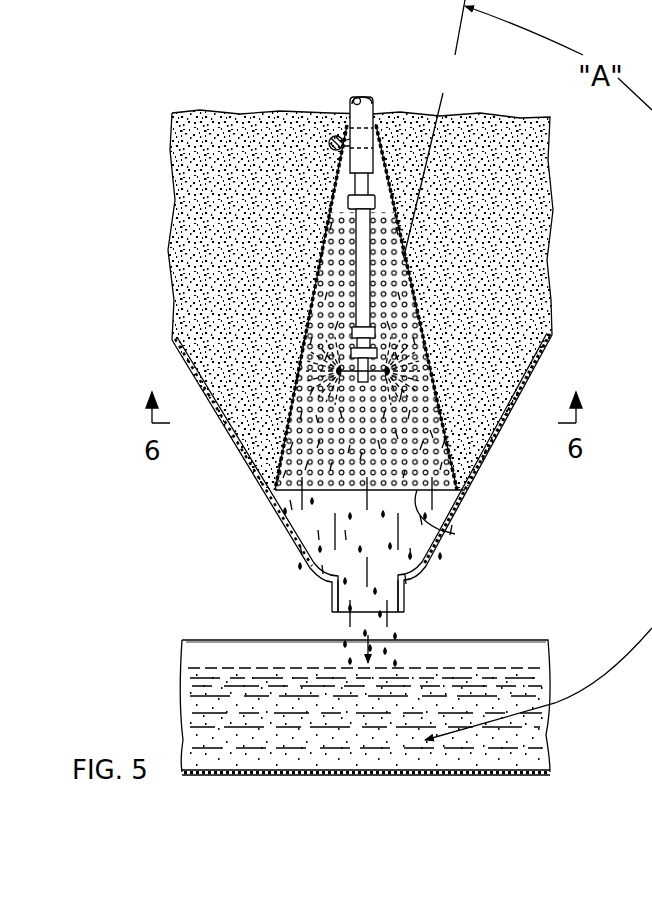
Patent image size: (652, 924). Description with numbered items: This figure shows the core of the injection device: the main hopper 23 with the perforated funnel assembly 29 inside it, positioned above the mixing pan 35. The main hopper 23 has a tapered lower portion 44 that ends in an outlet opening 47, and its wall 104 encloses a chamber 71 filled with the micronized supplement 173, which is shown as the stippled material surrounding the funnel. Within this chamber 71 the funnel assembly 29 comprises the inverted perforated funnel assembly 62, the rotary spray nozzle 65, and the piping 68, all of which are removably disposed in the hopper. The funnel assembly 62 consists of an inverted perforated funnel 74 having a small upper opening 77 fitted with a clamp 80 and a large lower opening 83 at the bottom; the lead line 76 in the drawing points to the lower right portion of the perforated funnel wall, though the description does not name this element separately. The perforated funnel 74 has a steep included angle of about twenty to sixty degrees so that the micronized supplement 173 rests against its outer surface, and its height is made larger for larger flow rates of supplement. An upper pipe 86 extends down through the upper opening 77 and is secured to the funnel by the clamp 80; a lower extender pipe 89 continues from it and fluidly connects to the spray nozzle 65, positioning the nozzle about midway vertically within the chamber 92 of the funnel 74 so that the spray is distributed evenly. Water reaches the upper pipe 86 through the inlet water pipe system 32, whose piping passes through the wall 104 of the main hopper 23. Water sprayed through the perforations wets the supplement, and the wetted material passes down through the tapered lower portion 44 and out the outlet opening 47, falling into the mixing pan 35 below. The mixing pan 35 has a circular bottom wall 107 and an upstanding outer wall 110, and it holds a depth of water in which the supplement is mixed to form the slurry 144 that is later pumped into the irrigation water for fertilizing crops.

The main hopper 23 is at (582, 160).
The perforated funnel assembly 29 is at (406, 118).
The inlet water pipe system 32 is at (420, 244).
The mixing pan 35 is at (516, 636).
The tapered lower portion 44 is at (462, 509).
The outlet opening 47 is at (402, 612).
The inverted perforated funnel assembly 62 is at (296, 359).
The rotary spray nozzle 65 is at (367, 444).
The piping 68 is at (344, 102).
The chamber 71 is at (194, 304).
The inverted perforated funnel 74 is at (277, 452).
The funnel wall 76 is at (441, 460).
The small upper opening 77 is at (376, 128).
The clamp 80 is at (329, 144).
The large lower opening 83 is at (455, 534).
The upper pipe 86 is at (366, 94).
The lower extender pipe 89 is at (374, 300).
The chamber 92 is at (278, 497).
The wall 104 is at (187, 367).
The circular bottom wall 107 is at (486, 773).
The upstanding outer wall 110 is at (257, 640).
The slurry 144 is at (330, 717).
The micronized supplement 173 is at (256, 243).